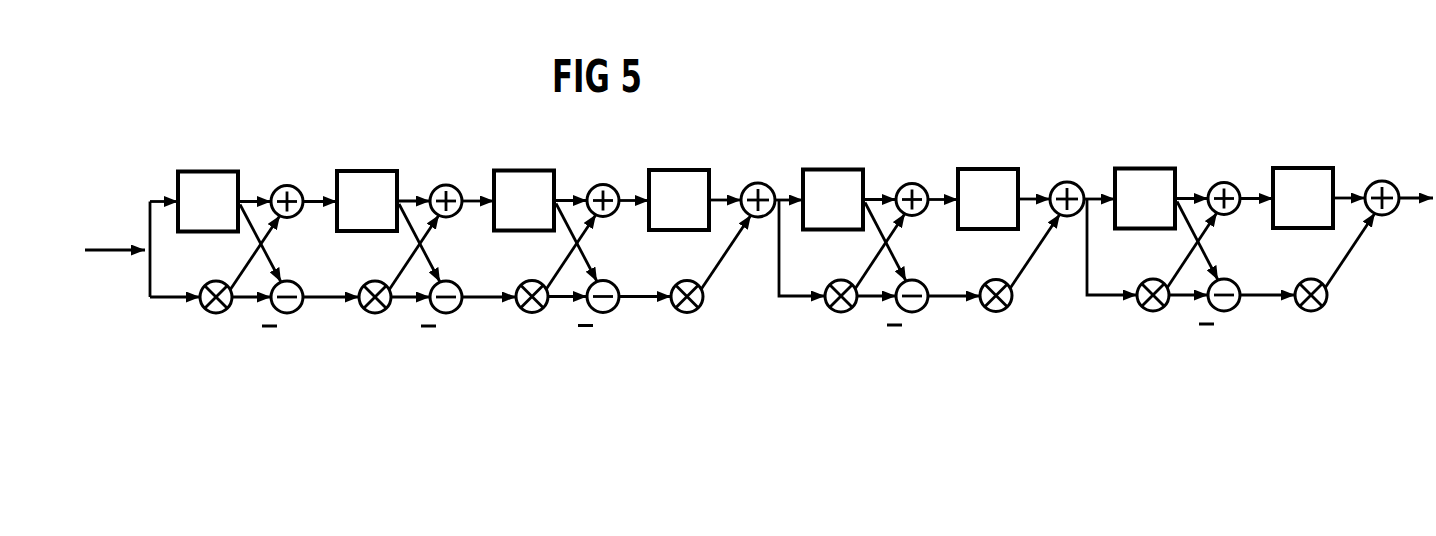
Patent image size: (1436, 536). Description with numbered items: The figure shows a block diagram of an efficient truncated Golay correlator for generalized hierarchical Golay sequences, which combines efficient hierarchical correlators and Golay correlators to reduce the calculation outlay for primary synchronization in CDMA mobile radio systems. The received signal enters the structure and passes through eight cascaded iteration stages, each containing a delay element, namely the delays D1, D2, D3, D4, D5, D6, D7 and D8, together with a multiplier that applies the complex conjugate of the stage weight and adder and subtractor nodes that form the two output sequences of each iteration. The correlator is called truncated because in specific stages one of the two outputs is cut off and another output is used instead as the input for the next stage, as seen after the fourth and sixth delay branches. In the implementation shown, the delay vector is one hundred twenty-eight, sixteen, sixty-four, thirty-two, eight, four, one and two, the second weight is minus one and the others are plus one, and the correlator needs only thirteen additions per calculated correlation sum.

The delay D1 is at (223, 172).
The delay D2 is at (382, 171).
The delay D3 is at (539, 170).
The delay D4 is at (694, 170).
The delay D5 is at (848, 170).
The delay D6 is at (1003, 169).
The delay D7 is at (1160, 168).
The delay D8 is at (1318, 168).